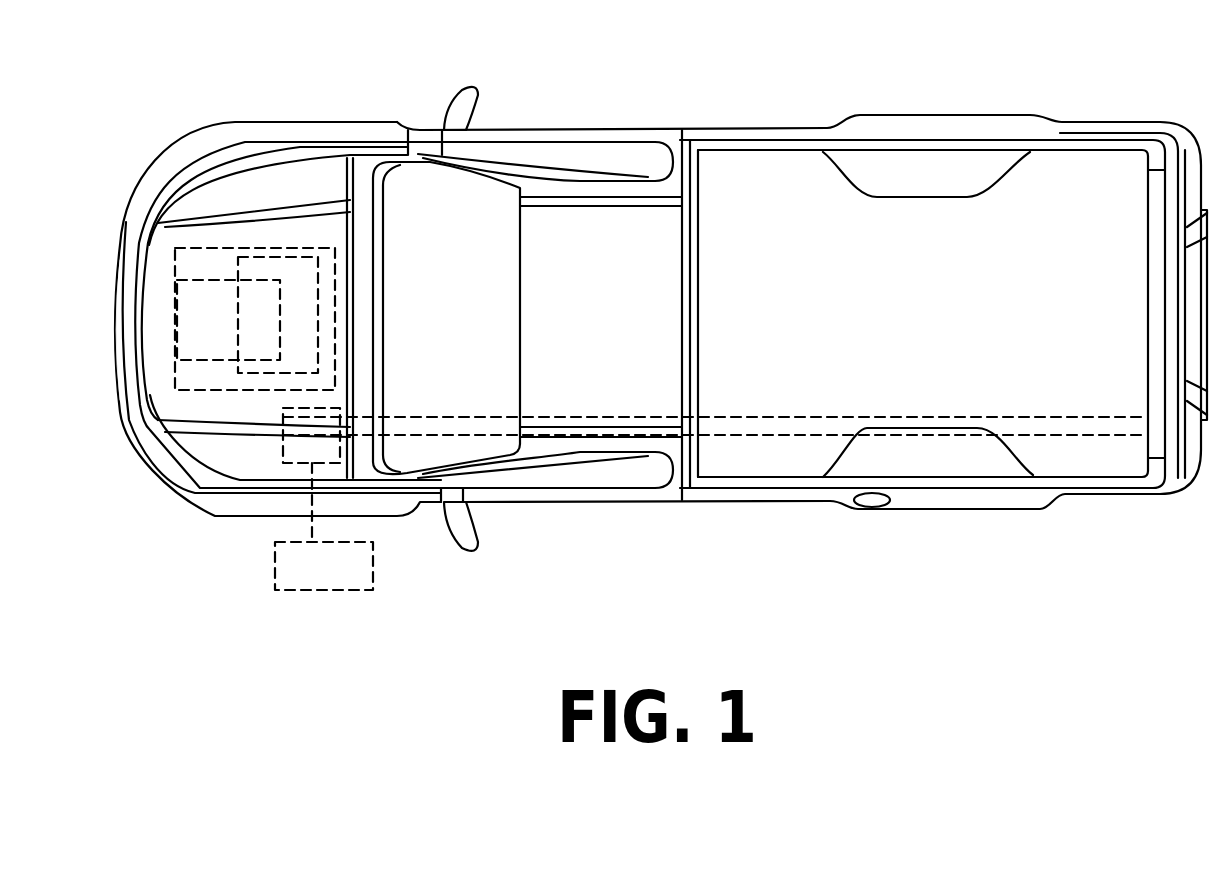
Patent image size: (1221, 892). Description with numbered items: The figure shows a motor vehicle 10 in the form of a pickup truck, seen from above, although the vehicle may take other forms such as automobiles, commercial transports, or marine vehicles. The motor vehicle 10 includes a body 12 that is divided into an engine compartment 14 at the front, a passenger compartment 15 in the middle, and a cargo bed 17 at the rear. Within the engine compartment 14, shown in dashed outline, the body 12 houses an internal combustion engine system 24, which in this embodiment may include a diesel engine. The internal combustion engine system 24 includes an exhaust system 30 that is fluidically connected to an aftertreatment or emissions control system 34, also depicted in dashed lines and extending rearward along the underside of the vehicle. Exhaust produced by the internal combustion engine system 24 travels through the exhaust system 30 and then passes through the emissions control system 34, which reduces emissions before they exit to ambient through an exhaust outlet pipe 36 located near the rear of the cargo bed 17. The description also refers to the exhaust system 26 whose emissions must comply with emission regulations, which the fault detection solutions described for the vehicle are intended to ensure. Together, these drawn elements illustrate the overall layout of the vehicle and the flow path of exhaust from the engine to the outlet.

The motor vehicle 10 is at (966, 570).
The body 12 is at (745, 517).
The engine compartment 14 is at (280, 180).
The passenger compartment 15 is at (458, 206).
The cargo bed 17 is at (784, 182).
The internal combustion engine system 24 is at (198, 312).
The exhaust system 26 is at (172, 247).
The exhaust system 30 is at (204, 420).
The emissions control system 34 is at (256, 461).
The exhaust outlet pipe 36 is at (1082, 456).